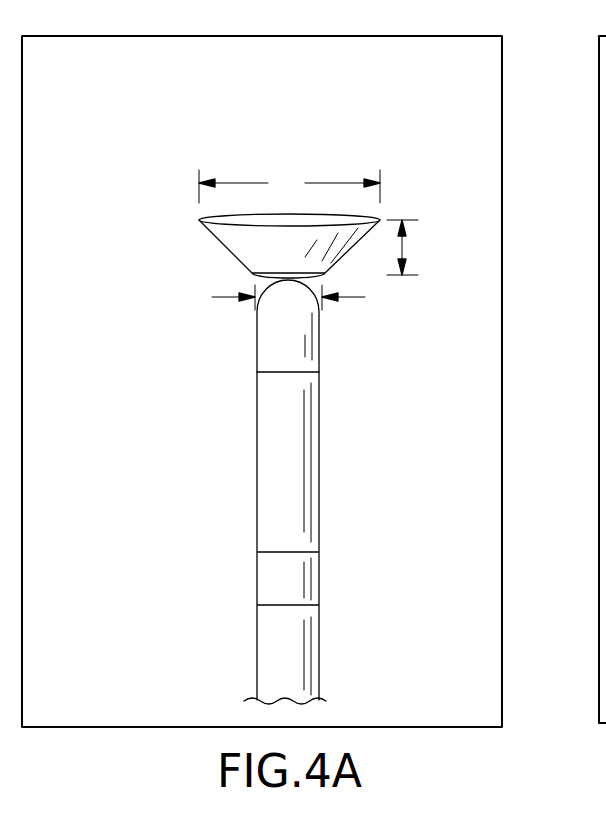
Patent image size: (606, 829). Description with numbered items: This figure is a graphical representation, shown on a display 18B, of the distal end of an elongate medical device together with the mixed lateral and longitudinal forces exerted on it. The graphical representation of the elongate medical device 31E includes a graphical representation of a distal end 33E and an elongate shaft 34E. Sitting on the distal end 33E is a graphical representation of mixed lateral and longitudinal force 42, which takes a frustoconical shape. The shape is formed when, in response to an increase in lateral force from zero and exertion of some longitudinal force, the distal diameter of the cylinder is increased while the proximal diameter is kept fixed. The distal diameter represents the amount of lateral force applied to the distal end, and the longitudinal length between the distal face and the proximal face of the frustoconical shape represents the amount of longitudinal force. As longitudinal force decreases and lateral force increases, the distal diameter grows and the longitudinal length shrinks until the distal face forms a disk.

The display 18B is at (503, 308).
The graphical representation of an elongate medical device 31E is at (140, 356).
The graphical representation of mixed lateral and longitudinal force 42 is at (228, 236).
The distal end 33E is at (310, 328).
The elongate shaft 34E is at (310, 421).